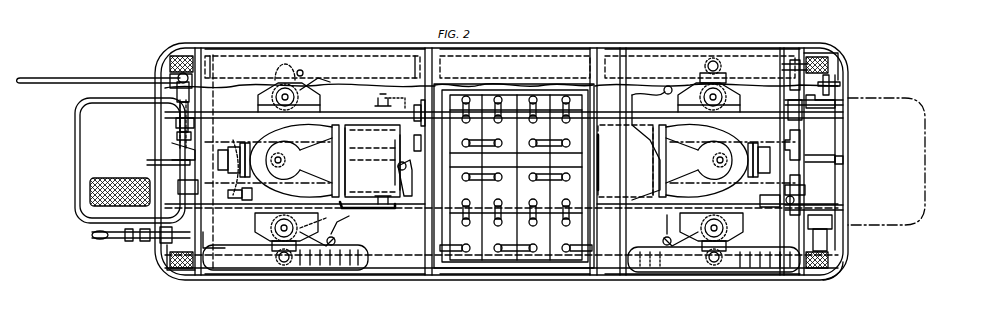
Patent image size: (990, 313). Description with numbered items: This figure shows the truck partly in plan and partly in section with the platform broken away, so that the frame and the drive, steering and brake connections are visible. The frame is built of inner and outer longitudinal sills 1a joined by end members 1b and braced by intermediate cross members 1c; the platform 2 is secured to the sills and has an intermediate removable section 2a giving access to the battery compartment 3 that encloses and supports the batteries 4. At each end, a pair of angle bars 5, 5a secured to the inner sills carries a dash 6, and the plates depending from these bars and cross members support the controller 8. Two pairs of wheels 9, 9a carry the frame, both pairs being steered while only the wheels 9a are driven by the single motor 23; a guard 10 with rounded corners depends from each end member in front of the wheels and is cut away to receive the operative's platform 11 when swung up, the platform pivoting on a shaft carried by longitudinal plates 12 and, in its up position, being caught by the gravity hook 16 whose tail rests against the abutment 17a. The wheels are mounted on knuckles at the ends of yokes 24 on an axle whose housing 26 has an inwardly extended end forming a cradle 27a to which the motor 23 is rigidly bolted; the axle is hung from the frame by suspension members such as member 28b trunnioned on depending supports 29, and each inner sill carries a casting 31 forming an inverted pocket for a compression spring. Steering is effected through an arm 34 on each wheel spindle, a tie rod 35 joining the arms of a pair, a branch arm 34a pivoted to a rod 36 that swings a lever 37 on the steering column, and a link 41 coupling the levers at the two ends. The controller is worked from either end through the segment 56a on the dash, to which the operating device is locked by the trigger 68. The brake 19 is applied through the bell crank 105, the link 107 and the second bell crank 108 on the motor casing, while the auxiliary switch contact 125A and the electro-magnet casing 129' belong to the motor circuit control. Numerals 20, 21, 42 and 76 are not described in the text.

The longitudinal sills 1a is at (375, 50).
The end members 1b is at (166, 68).
The intermediate cross members 1c is at (425, 245).
The platform 2 is at (238, 68).
The intermediate removable section 2a is at (555, 65).
The battery compartment 3 is at (600, 274).
The batteries 4 is at (508, 100).
The angle bar 5 is at (836, 98).
The angle bar 5a is at (170, 116).
The dash 6 is at (200, 256).
The controller 8 is at (170, 131).
The wheels 9 is at (246, 273).
The wheels 9a is at (680, 275).
The guard 10 is at (840, 276).
The operative's platform 11 is at (78, 112).
The plates 12 is at (843, 105).
The gravity operating hook 16 is at (845, 160).
The abutment 17a is at (800, 150).
The brake 19 is at (415, 112).
The corner block 20 is at (180, 275).
The corner plate 21 is at (168, 262).
The motor 23 is at (372, 161).
The yokes 24 is at (296, 262).
The housing 26 is at (255, 200).
The cradle 27a is at (648, 120).
The suspension member 28b is at (358, 169).
The depending brackets or supports 29 is at (345, 106).
The casting 31 is at (266, 232).
The arm 34 is at (310, 230).
The branch arm 34a is at (312, 80).
The tie rod 35 is at (336, 236).
The rod 36 is at (252, 114).
The lever 37 is at (178, 97).
The link 41 is at (235, 150).
The handle bar 42 is at (104, 76).
The segment 56a is at (842, 72).
The trigger 68 is at (147, 240).
The grille 76 is at (145, 213).
The bell crank 105 is at (236, 200).
The link 107 is at (352, 208).
The second bell crank 108 is at (400, 185).
The contact 125A is at (180, 190).
The casing 129' is at (158, 151).